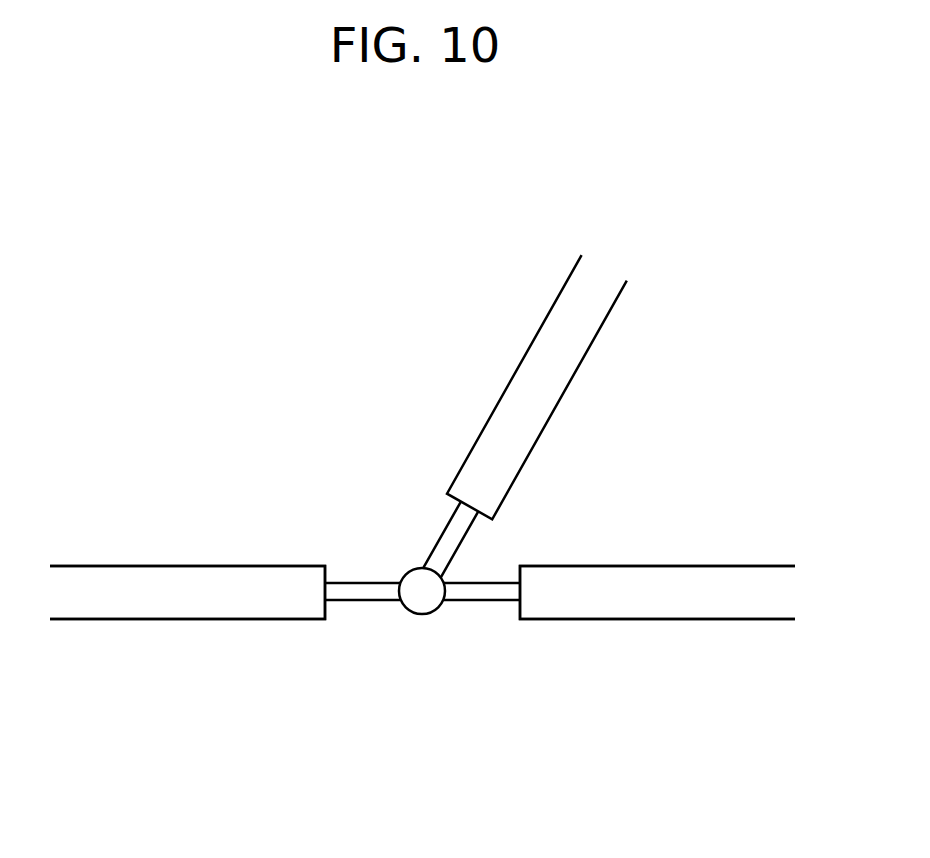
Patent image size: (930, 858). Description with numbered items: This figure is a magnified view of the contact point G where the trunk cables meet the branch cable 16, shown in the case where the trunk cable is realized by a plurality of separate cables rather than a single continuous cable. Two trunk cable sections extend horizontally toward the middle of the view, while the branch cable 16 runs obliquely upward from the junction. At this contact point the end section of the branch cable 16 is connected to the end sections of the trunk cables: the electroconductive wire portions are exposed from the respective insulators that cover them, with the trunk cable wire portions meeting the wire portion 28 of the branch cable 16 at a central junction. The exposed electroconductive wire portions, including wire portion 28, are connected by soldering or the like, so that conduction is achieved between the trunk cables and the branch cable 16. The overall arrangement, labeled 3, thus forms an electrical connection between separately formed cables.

The robot arm assembly 3 is at (275, 782).
The branch cable 16 is at (438, 348).
The electroconductive wire portion 28 is at (444, 533).